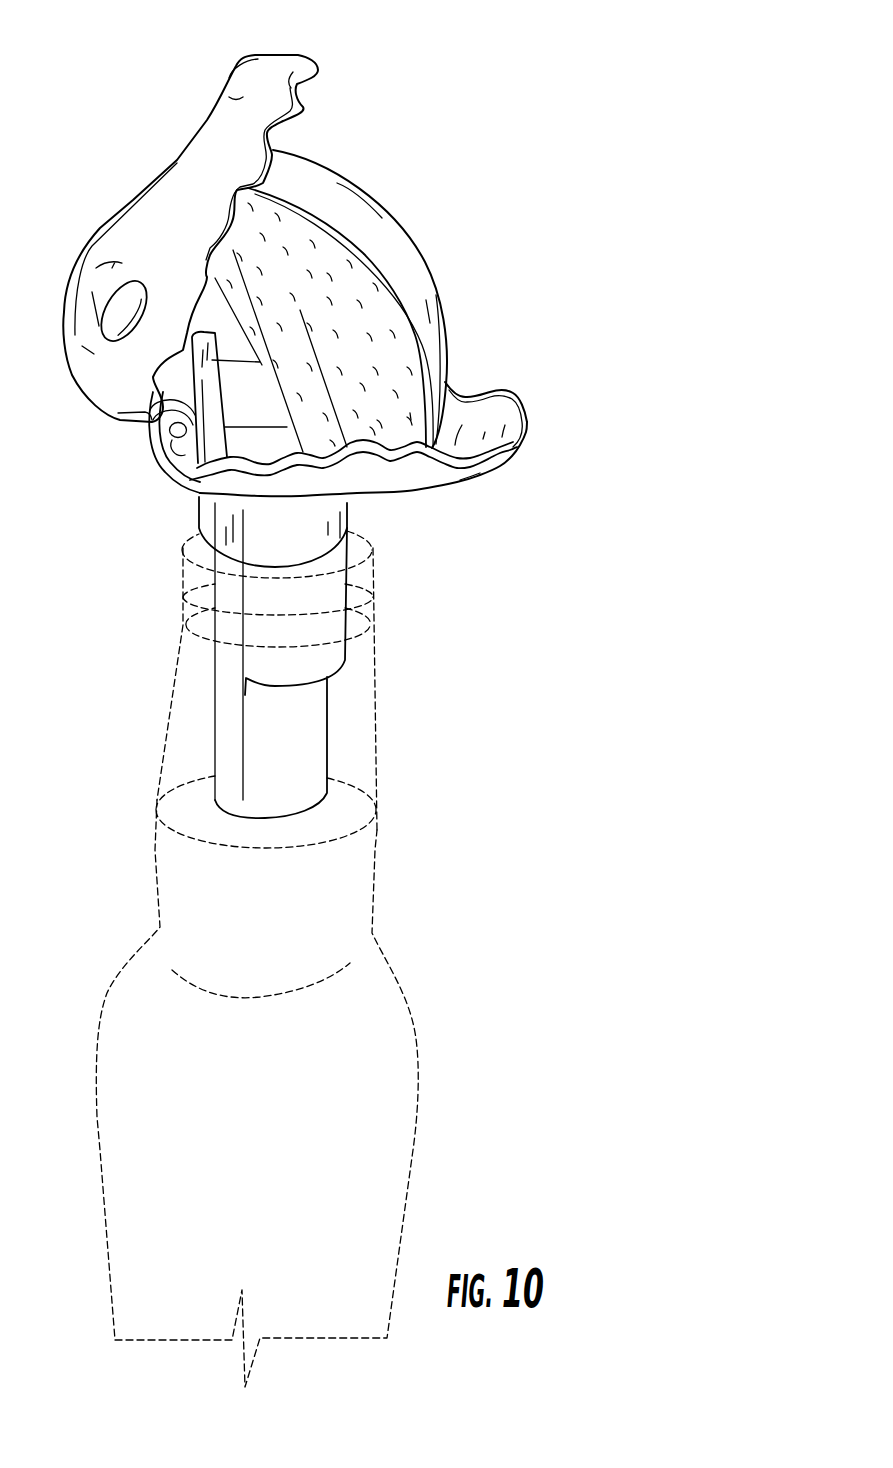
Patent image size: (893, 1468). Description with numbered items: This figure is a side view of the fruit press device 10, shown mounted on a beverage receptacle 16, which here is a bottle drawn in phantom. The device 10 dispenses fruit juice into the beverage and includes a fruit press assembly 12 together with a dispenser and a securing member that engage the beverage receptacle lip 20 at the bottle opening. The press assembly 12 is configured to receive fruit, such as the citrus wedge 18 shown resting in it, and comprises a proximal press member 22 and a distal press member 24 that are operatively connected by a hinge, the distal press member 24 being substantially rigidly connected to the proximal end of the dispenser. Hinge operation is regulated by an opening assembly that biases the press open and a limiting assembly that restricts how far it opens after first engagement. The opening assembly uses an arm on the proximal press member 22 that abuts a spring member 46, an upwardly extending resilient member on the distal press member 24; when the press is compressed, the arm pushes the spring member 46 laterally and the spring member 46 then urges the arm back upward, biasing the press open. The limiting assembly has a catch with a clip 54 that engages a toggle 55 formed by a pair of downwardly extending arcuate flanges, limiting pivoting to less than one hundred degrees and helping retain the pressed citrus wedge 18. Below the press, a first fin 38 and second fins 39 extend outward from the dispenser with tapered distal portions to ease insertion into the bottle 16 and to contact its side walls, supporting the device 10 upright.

The fruit press device 10 is at (471, 156).
The fruit press assembly 12 is at (112, 373).
The beverage receptacle 16 is at (360, 1117).
The citrus wedge 18 is at (372, 310).
The beverage receptacle lip 20 is at (352, 576).
The proximal press member 22 is at (270, 77).
The distal press member 24 is at (475, 412).
The first fin 38 is at (318, 533).
The second fins 39 is at (220, 527).
The spring member 46 is at (200, 452).
The clip 54 is at (178, 442).
The toggle 55 is at (150, 424).